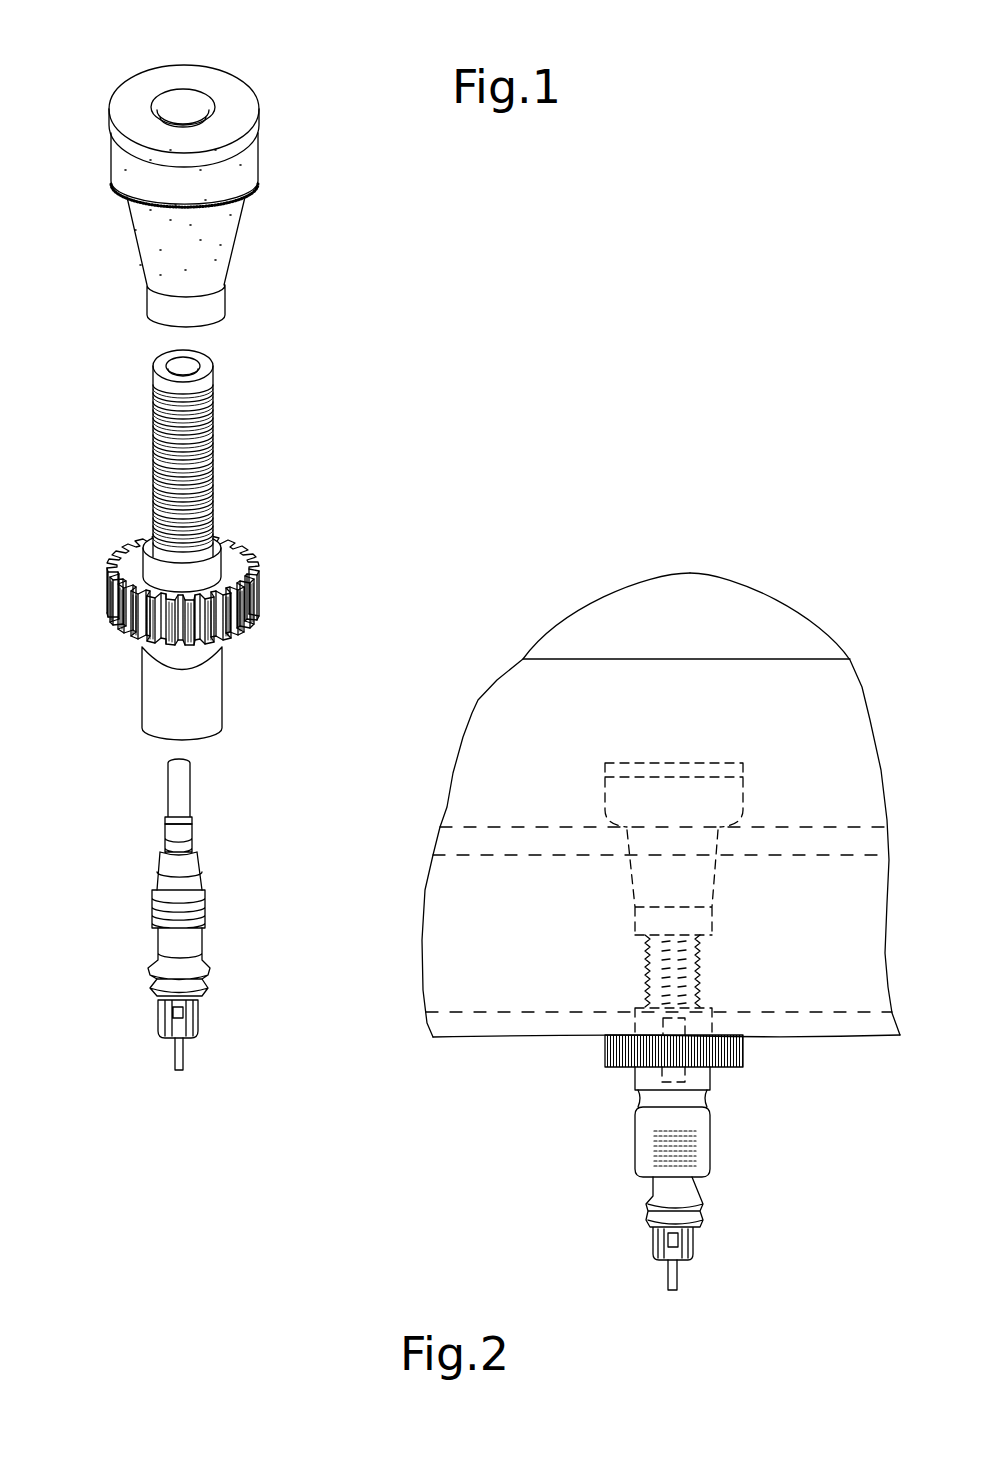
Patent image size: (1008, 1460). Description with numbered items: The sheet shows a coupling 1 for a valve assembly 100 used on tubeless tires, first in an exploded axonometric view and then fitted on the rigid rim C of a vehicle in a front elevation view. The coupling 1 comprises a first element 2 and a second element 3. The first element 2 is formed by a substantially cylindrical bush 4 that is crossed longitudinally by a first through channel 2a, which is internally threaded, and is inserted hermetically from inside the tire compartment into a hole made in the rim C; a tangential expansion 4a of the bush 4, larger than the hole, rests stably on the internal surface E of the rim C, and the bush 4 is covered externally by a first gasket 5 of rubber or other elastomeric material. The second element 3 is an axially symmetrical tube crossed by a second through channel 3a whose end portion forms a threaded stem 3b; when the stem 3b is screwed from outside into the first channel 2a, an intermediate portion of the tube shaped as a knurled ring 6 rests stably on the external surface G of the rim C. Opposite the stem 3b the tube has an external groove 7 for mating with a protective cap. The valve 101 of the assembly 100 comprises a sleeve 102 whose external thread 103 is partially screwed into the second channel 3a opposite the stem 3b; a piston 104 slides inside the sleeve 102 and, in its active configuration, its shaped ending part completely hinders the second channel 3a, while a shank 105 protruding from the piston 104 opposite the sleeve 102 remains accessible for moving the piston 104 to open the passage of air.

In FIG. 1, the coupling 1 is at (86, 293).
In FIG. 2, the coupling 1 is at (770, 1061).
In FIG. 1, the first element 2 is at (262, 82).
In FIG. 2, the first element 2 is at (756, 756).
In FIG. 1, the first through channel 2a is at (170, 106).
In FIG. 1, the second element 3 is at (217, 349).
In FIG. 2, the second element 3 is at (597, 1035).
In FIG. 1, the second through channel 3a is at (166, 361).
In FIG. 1, the threaded stem 3b is at (160, 452).
In FIG. 1, the bush 4 is at (211, 90).
In FIG. 2, the bush 4 is at (683, 754).
In FIG. 2, the tangential expansion 4a is at (630, 760).
In FIG. 1, the first gasket 5 is at (213, 237).
In FIG. 2, the first gasket 5 is at (735, 874).
In FIG. 1, the knurled ring 6 is at (258, 590).
In FIG. 2, the knurled ring 6 is at (612, 1066).
In FIG. 1, the external groove 7 is at (153, 652).
In FIG. 2, the external groove 7 is at (710, 1101).
In FIG. 1, the valve assembly 100 is at (350, 472).
In FIG. 2, the valve assembly 100 is at (772, 1179).
In FIG. 1, the valve 101 is at (217, 838).
In FIG. 2, the valve 101 is at (715, 1250).
In FIG. 1, the sleeve 102 is at (200, 938).
In FIG. 2, the sleeve 102 is at (658, 1194).
In FIG. 1, the external thread 103 is at (160, 898).
In FIG. 2, the external thread 103 is at (638, 1157).
In FIG. 1, the piston 104 is at (178, 792).
In FIG. 2, the piston 104 is at (737, 1008).
In FIG. 1, the shank 105 is at (196, 1034).
In FIG. 2, the shank 105 is at (672, 1273).
In FIG. 2, the internal surface E is at (787, 827).
In FIG. 2, the external surface G is at (463, 1038).
In FIG. 2, the rim C is at (534, 1045).